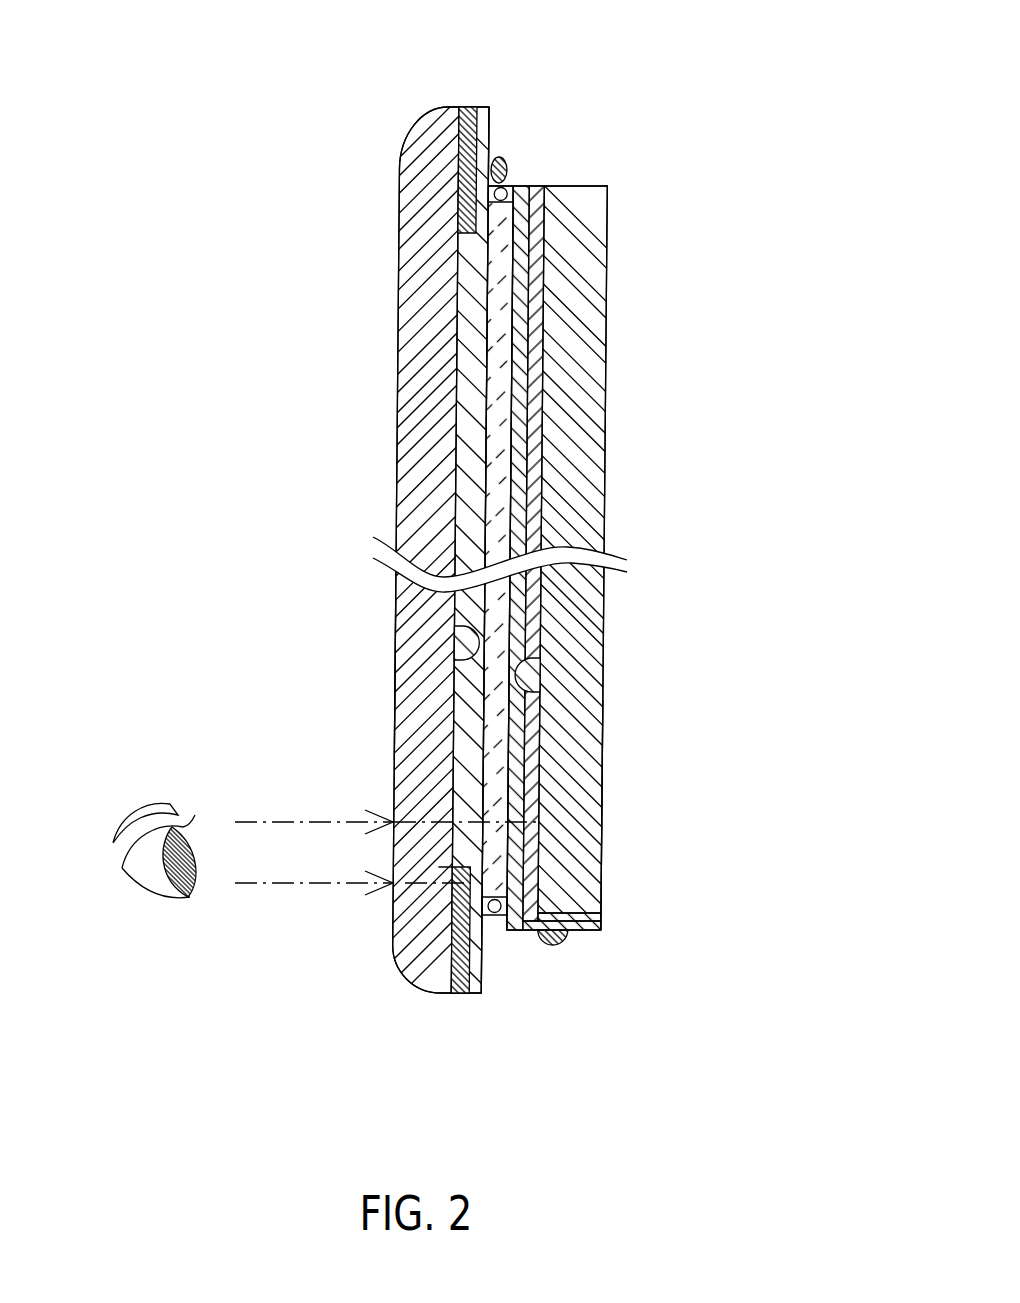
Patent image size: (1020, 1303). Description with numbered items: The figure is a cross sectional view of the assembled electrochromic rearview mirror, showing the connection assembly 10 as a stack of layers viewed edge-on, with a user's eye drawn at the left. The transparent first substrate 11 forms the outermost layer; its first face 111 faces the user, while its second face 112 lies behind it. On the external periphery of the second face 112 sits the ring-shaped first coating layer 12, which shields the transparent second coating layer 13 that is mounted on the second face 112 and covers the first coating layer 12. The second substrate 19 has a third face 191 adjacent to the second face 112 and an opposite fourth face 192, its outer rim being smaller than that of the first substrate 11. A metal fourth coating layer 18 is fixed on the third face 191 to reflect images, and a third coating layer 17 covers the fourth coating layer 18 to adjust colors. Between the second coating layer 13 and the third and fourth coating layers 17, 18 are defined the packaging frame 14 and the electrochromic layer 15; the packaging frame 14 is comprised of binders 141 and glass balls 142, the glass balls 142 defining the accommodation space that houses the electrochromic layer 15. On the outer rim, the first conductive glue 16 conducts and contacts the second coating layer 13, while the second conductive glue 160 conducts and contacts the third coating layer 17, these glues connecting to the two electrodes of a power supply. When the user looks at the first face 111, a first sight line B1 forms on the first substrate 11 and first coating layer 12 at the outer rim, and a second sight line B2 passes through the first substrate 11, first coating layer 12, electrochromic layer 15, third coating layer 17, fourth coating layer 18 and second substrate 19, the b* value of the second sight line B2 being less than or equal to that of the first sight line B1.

The connection assembly 10 is at (392, 138).
The first substrate 11 is at (408, 290).
The first face 111 is at (395, 680).
The second face 112 is at (453, 626).
The first coating layer 12 is at (470, 189).
The second coating layer 13 is at (463, 336).
The packaging frame 14 is at (508, 187).
The binders 141 is at (507, 902).
The glass balls 142 is at (503, 881).
The electrochromic layer 15 is at (492, 406).
The first conductive glue 16 is at (508, 178).
The second conductive glue 160 is at (555, 945).
The third coating layer 17 is at (520, 425).
The fourth coating layer 18 is at (538, 348).
The second substrate 19 is at (577, 275).
The third face 191 is at (527, 660).
The fourth face 192 is at (603, 730).
The first sight line B1 is at (438, 868).
The second sight line B2 is at (416, 822).